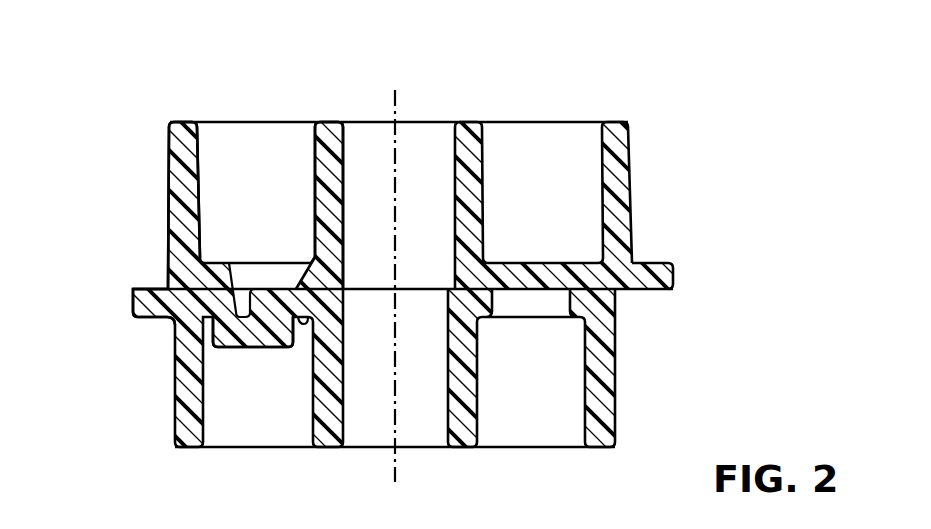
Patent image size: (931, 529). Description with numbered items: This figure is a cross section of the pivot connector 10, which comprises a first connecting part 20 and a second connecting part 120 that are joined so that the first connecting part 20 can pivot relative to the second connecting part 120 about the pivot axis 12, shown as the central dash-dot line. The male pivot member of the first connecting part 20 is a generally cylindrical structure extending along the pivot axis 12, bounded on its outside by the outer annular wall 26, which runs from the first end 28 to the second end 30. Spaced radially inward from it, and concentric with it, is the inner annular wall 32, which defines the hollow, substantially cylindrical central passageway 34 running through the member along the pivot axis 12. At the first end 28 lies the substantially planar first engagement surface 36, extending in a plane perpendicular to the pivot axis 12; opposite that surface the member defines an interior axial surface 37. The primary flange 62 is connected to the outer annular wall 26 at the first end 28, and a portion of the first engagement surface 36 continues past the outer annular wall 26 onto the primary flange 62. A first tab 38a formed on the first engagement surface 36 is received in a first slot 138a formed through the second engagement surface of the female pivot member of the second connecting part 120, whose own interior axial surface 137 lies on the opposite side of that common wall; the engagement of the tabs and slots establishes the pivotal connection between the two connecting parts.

The pivot connector 10 is at (465, 264).
The pivot axis 12 is at (399, 462).
The first connecting part 20 is at (160, 204).
The outer annular wall 26 is at (632, 133).
The first end 28 is at (166, 289).
The second end 30 is at (172, 121).
The inner annular wall 32 is at (347, 128).
The central passageway 34 is at (437, 109).
The first engagement surface 36 is at (302, 286).
The interior axial surface 37 is at (560, 262).
The first tab 38a is at (245, 348).
The primary flange 62 is at (662, 262).
The second connecting part 120 is at (624, 412).
The interior axial surface 137 is at (303, 320).
The first slot 138a is at (255, 272).